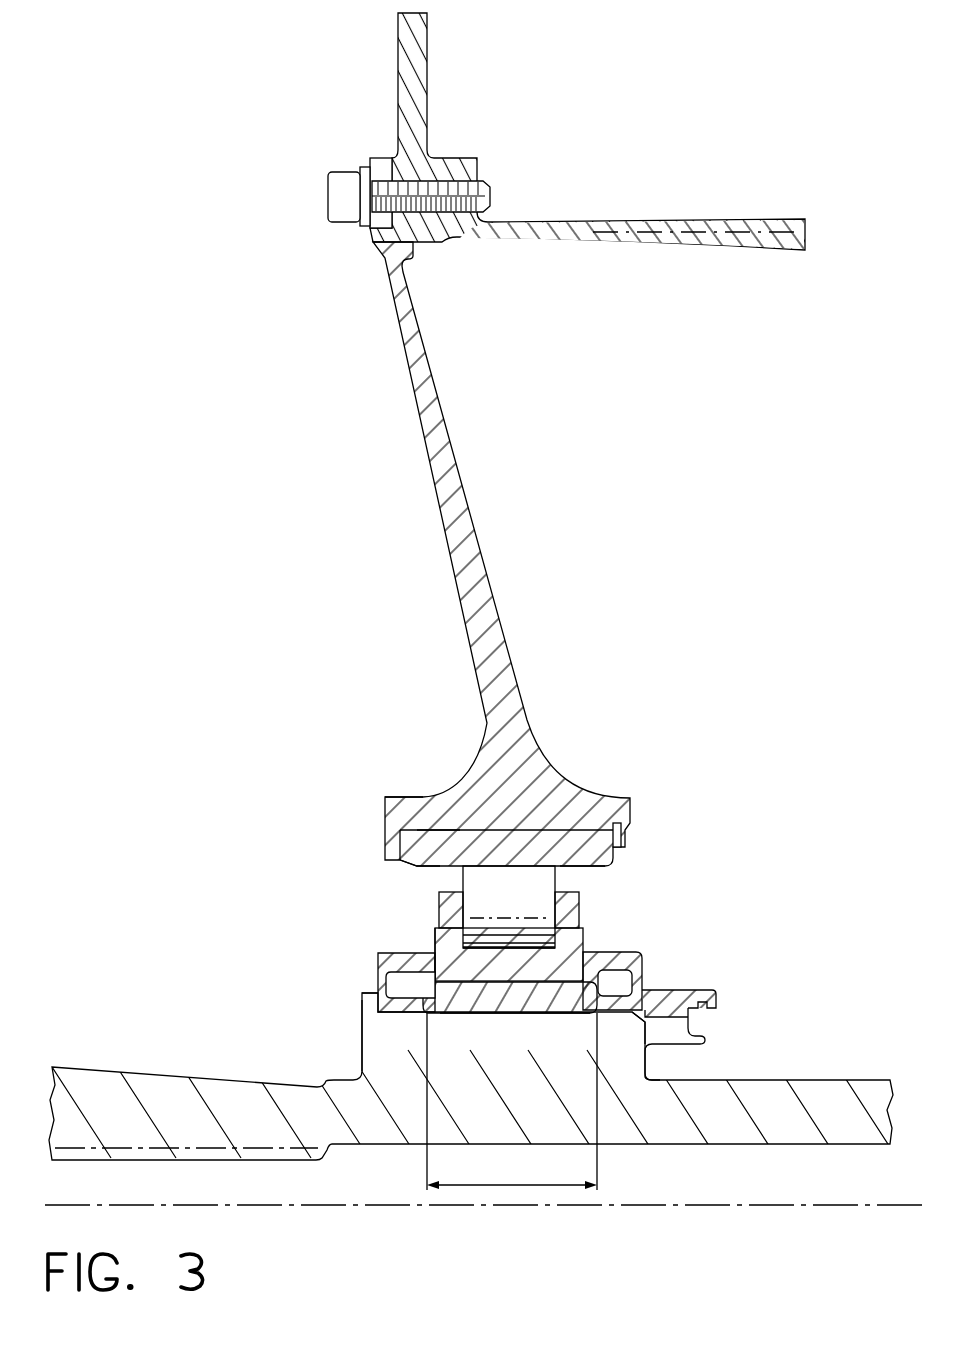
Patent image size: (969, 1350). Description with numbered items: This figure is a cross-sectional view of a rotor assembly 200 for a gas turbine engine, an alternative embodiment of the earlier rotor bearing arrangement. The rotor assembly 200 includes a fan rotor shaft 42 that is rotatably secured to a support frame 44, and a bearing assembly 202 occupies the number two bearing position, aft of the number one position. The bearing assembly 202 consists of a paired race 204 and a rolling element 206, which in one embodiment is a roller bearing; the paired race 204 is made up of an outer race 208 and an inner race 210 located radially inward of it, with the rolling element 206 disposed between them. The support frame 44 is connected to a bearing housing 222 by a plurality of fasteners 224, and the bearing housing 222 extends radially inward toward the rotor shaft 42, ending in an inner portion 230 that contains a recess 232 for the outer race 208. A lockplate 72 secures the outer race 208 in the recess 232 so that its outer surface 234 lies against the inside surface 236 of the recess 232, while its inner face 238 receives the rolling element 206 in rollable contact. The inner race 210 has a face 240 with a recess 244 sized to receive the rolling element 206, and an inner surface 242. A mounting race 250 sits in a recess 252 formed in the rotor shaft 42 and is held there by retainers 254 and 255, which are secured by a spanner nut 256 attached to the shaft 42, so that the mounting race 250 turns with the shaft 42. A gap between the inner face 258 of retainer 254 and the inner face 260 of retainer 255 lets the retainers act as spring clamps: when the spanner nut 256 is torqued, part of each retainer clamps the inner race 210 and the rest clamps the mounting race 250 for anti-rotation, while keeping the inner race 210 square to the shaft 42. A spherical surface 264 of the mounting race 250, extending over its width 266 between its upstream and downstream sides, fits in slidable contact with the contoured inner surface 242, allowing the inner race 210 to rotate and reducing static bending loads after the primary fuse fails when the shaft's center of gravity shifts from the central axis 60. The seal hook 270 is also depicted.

The rotor shaft 42 is at (168, 1083).
The support frame 44 is at (621, 222).
The central axis 60 is at (730, 1205).
The lockplate 72 is at (624, 837).
The rotor assembly 200 is at (192, 322).
The bearing assembly 202 is at (285, 787).
The paired race 204 is at (724, 883).
The rolling element 206 is at (531, 899).
The outer race 208 is at (615, 860).
The inner race 210 is at (585, 945).
The bearing housing 222 is at (437, 393).
The fasteners 224 is at (329, 183).
The inner portion 230 is at (631, 708).
The recess 232 is at (423, 845).
The outer surface 234 is at (573, 812).
The inside surface 236 is at (580, 866).
The inner face 238 is at (418, 871).
The face 240 is at (578, 920).
The inner surface 242 is at (513, 1008).
The recess 244 is at (484, 928).
The mounting race 250 is at (438, 1025).
The recess 252 is at (380, 1052).
The retainer 254 is at (375, 1013).
The retainer 255 is at (644, 963).
The spanner nut 256 is at (716, 994).
The inner face of retainer 258 is at (415, 990).
The inner face of retainer 260 is at (644, 977).
The surface 264 is at (458, 962).
The width 266 is at (503, 1185).
The seal hook 270 is at (646, 1060).